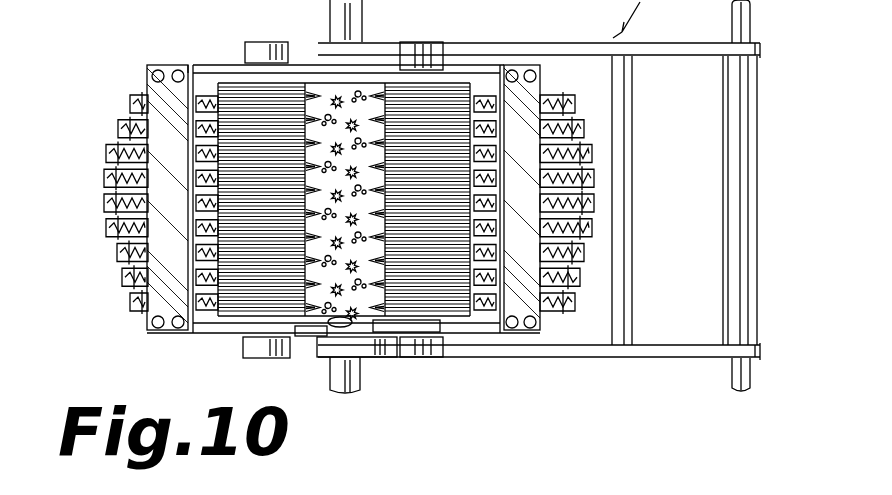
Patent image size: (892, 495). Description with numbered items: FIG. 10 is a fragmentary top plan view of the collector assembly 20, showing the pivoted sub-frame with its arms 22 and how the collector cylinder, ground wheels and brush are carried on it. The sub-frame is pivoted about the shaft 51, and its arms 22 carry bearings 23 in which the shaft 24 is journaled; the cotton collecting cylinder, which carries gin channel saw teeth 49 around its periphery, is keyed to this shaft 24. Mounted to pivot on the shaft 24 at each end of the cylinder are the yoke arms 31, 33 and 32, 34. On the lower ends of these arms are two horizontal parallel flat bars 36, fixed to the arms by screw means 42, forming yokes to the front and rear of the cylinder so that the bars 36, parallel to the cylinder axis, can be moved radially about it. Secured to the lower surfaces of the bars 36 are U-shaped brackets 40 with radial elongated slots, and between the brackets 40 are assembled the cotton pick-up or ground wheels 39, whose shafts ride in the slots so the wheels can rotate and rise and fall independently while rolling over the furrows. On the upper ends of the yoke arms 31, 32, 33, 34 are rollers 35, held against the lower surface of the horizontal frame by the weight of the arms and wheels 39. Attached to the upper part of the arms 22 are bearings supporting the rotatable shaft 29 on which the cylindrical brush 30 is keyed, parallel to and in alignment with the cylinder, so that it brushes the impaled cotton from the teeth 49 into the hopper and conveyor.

The assembly 20 is at (450, 406).
The arms 22 is at (486, 43).
The bearings 23 is at (318, 338).
The shaft 24 is at (358, 394).
The rotatable shaft 29 is at (300, 340).
The cylindrical brush 30 is at (305, 295).
The yoke arm 31 is at (215, 325).
The yoke arm 32 is at (388, 357).
The yoke arm 33 is at (220, 72).
The yoke arm 34 is at (385, 42).
The rollers 35 is at (261, 42).
The horizontal rectangular flat bars 36 is at (150, 72).
The ground wheels 39 is at (112, 165).
The U-shaped brackets 40 is at (112, 212).
The screw means 42 is at (160, 70).
The gin channel saw teeth 49 is at (447, 298).
The shaft 51 is at (732, 22).